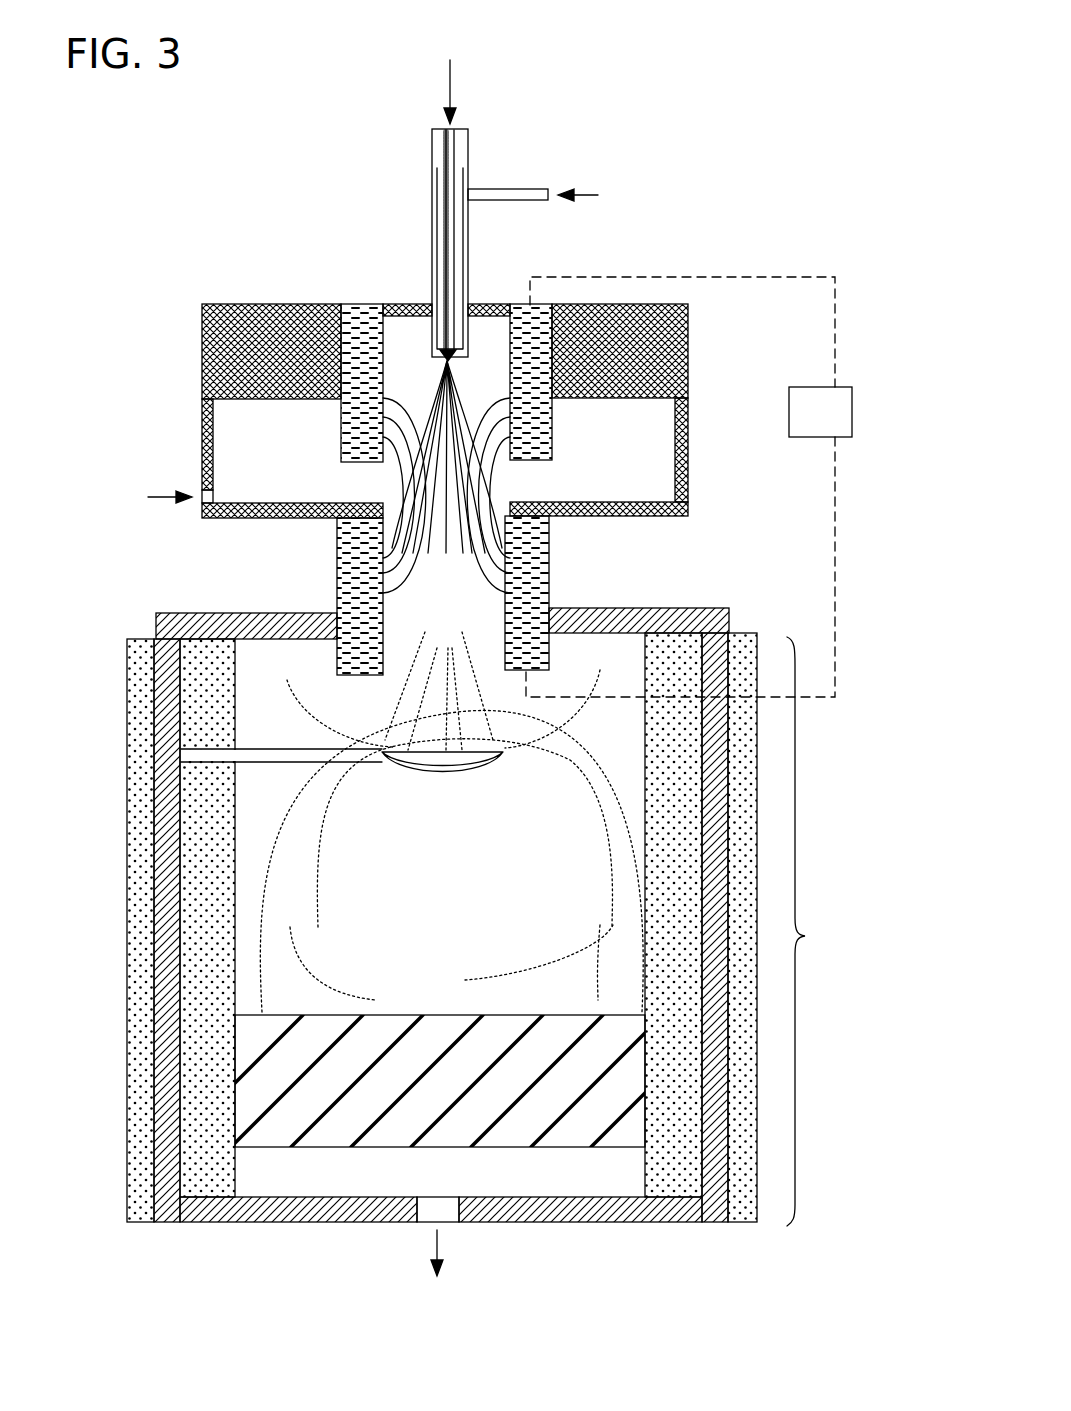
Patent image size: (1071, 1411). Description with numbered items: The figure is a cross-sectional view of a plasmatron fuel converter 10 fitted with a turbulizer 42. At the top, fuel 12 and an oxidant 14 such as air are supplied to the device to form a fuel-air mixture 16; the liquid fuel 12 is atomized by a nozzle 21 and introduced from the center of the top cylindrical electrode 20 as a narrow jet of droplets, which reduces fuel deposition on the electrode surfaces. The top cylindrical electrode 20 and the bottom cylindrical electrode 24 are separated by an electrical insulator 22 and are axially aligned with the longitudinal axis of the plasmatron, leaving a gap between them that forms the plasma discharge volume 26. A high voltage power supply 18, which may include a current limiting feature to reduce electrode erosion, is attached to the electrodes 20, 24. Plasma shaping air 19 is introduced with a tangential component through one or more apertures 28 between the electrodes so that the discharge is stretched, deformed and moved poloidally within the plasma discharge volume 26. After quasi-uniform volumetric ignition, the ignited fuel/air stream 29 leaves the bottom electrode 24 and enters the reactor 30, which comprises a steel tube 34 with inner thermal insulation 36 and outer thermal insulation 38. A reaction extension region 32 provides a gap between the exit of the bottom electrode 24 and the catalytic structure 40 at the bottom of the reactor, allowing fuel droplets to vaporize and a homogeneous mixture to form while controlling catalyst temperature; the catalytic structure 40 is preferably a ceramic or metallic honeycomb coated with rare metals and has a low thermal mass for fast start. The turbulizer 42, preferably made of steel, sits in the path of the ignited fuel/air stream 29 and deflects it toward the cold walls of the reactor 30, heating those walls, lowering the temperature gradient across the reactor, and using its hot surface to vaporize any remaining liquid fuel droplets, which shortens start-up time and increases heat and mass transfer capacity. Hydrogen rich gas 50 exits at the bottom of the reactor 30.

The plasmatron fuel converter 10 is at (758, 92).
The fuel 12 is at (466, 92).
The oxidant 14 is at (561, 195).
The fuel-air mixture 16 is at (438, 380).
The high voltage power supply 18 is at (689, 487).
The plasma shaping air 19 is at (143, 497).
The top cylindrical electrode 20 is at (340, 315).
The nozzle 21 is at (458, 378).
The electrical insulator 22 is at (247, 353).
The bottom cylindrical electrode 24 is at (360, 597).
The plasma discharge volume 26 is at (452, 487).
The apertures 28 is at (357, 483).
The ignited fuel/air stream 29 is at (320, 852).
The reactor 30 is at (814, 931).
The reaction extension region 32 is at (311, 901).
The steel tube 34 is at (165, 937).
The inner thermal insulation 36 is at (207, 1060).
The outer thermal insulation 38 is at (140, 1000).
The catalytic structure 40 is at (318, 1127).
The turbulizer 42 is at (443, 774).
The hydrogen rich gas 50 is at (459, 1253).